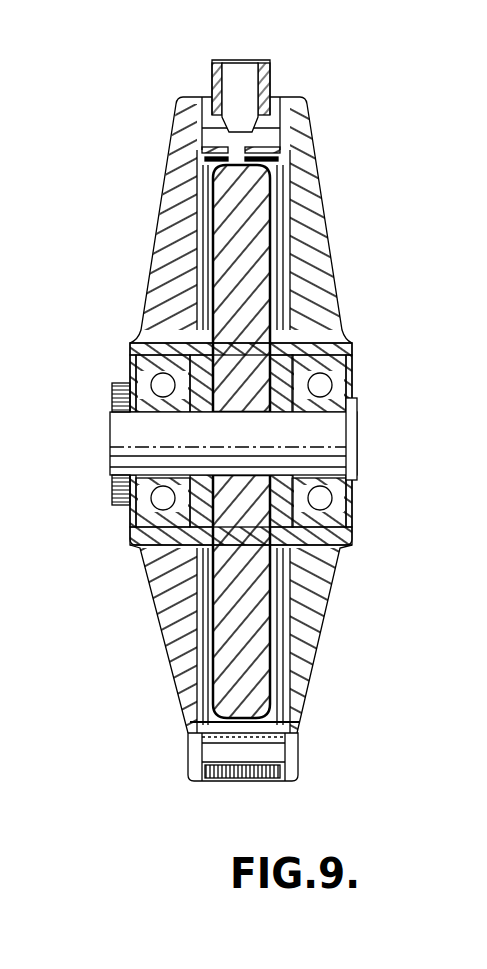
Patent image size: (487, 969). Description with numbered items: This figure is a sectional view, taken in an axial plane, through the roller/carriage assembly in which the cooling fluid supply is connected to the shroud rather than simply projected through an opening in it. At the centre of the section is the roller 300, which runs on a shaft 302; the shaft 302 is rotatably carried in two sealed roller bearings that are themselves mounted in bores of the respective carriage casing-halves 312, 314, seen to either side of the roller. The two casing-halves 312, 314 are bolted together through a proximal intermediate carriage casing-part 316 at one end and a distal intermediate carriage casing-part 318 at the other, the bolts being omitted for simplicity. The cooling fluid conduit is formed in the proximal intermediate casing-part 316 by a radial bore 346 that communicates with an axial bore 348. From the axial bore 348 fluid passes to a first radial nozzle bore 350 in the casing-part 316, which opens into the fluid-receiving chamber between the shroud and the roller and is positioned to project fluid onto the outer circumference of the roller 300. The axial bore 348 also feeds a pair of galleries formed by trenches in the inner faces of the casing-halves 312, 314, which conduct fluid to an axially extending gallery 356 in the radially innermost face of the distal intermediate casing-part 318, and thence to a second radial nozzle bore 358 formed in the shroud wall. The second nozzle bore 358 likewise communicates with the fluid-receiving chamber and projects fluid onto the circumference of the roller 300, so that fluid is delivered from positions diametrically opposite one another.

The roller 300 is at (215, 183).
The shaft 302 is at (360, 440).
The carriage casing-half 312 is at (152, 603).
The carriage casing-half 314 is at (322, 640).
The proximal intermediate carriage casing-part 316 is at (274, 97).
The distal intermediate carriage casing-part 318 is at (268, 781).
The radial bore 346 is at (243, 86).
The axial bore 348 is at (310, 149).
The first radial nozzle bore 350 is at (263, 130).
The axially extending gallery 356 is at (235, 723).
The second radial nozzle bore 358 is at (242, 722).